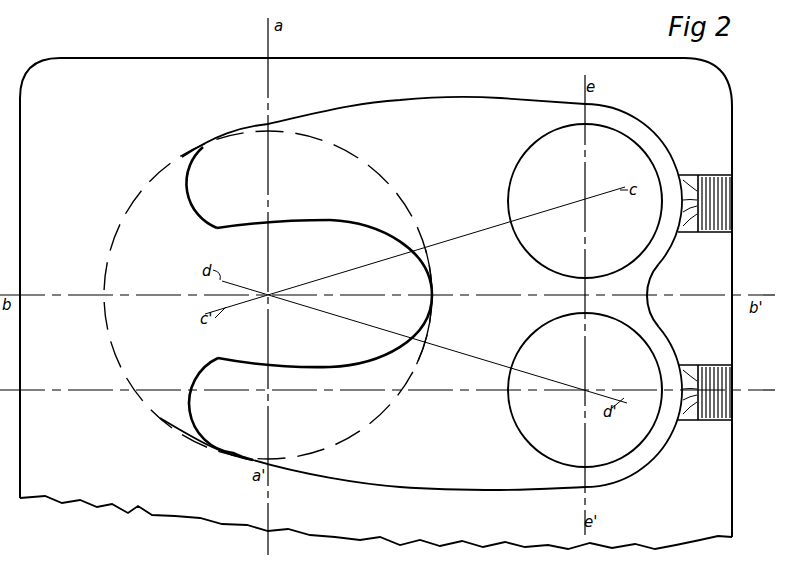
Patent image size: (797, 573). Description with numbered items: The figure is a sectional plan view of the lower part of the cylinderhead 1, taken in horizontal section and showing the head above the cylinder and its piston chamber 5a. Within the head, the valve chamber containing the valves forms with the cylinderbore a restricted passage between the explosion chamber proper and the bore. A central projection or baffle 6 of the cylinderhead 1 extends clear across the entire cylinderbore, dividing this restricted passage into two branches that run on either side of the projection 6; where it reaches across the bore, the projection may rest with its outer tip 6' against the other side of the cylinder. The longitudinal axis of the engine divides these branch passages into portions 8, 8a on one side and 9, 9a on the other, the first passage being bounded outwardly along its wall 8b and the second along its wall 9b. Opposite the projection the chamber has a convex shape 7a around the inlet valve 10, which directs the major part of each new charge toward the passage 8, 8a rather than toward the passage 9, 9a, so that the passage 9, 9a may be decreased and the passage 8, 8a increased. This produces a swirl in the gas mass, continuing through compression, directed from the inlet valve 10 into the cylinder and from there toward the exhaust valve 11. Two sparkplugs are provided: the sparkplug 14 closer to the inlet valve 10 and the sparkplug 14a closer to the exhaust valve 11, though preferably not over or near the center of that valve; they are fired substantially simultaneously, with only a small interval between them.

The cylinderhead 1 is at (734, 113).
The piston chamber 5a is at (268, 295).
The central projection or baffle 6 is at (416, 295).
The outer tip 6' is at (395, 293).
The convex shape 7a is at (651, 278).
The passage portion 8 is at (216, 187).
The passage portion 8a is at (273, 197).
The upper outer chamber wall 8b is at (488, 97).
The passage portion 9 is at (221, 409).
The passage portion 9a is at (274, 387).
The lower outer chamber wall 9b is at (484, 492).
The inlet valve 10 is at (647, 155).
The exhaust valve 11 is at (638, 341).
The sparkplug 14 is at (733, 182).
The sparkplug 14a is at (733, 391).